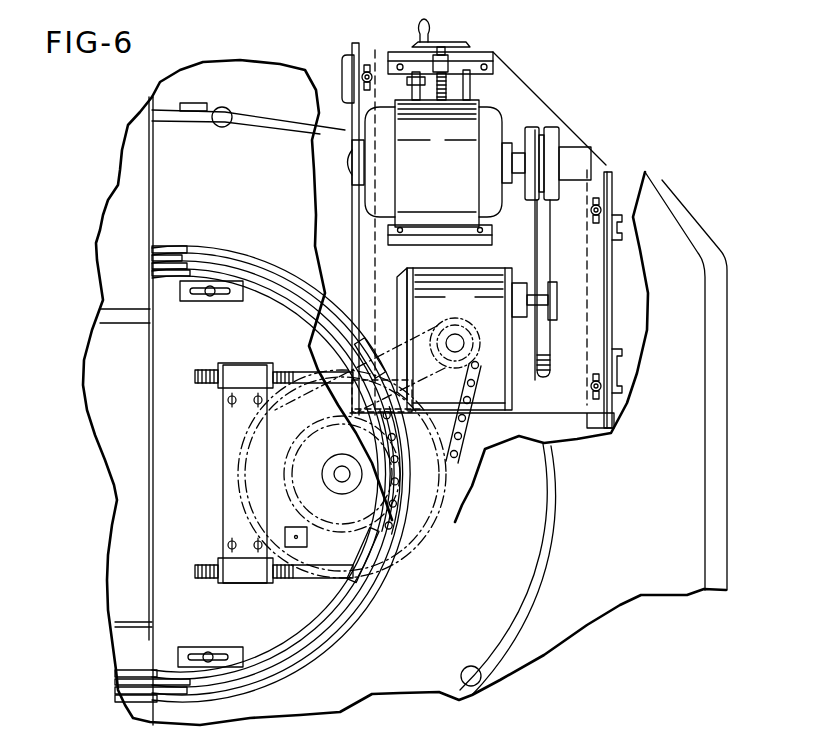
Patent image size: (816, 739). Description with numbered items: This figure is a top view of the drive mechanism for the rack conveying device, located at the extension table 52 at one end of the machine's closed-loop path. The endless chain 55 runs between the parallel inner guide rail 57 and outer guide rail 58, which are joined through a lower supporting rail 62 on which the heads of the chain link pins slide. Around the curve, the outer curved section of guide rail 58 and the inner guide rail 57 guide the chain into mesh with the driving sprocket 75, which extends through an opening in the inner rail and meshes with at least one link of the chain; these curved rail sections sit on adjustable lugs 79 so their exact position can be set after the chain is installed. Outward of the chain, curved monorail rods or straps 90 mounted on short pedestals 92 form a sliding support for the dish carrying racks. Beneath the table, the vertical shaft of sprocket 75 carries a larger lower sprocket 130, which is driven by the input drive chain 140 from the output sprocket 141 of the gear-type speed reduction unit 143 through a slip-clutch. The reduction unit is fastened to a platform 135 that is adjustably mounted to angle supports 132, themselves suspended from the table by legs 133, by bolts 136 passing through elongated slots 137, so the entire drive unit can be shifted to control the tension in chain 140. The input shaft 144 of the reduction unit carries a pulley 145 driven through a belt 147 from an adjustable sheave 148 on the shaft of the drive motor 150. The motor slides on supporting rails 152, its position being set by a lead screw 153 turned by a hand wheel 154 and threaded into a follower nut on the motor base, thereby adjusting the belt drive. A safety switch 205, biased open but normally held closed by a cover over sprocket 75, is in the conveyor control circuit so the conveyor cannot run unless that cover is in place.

The extension table 52 is at (593, 620).
The endless chain 55 is at (375, 488).
The inner guide rail 57 is at (281, 300).
The outer guide rail 58 is at (262, 260).
The lower supporting rail 62 is at (307, 303).
The driving sprocket 75 is at (294, 496).
The adjustable lugs 79 is at (193, 302).
The monorail rods or straps 90 is at (258, 120).
The pedestals 92 is at (221, 108).
The lower sprocket 130 is at (238, 468).
The angle supports 132 is at (612, 302).
The legs 133 is at (622, 228).
The platform 135 is at (549, 100).
The bolts 136 is at (364, 73).
The elongated slots 137 is at (367, 72).
The input drive chain 140 is at (463, 427).
The output sprocket 141 is at (455, 322).
The gear-type speed reduction unit 143 is at (494, 377).
The input shaft 144 is at (530, 298).
The pulley 145 is at (549, 265).
The belt 147 is at (540, 220).
The adjustable sheave 148 is at (560, 137).
The drive motor 150 is at (456, 206).
The supporting rails 152 is at (466, 100).
The lead screw 153 is at (447, 88).
The hand wheel 154 is at (445, 42).
The safety switch 205 is at (307, 540).